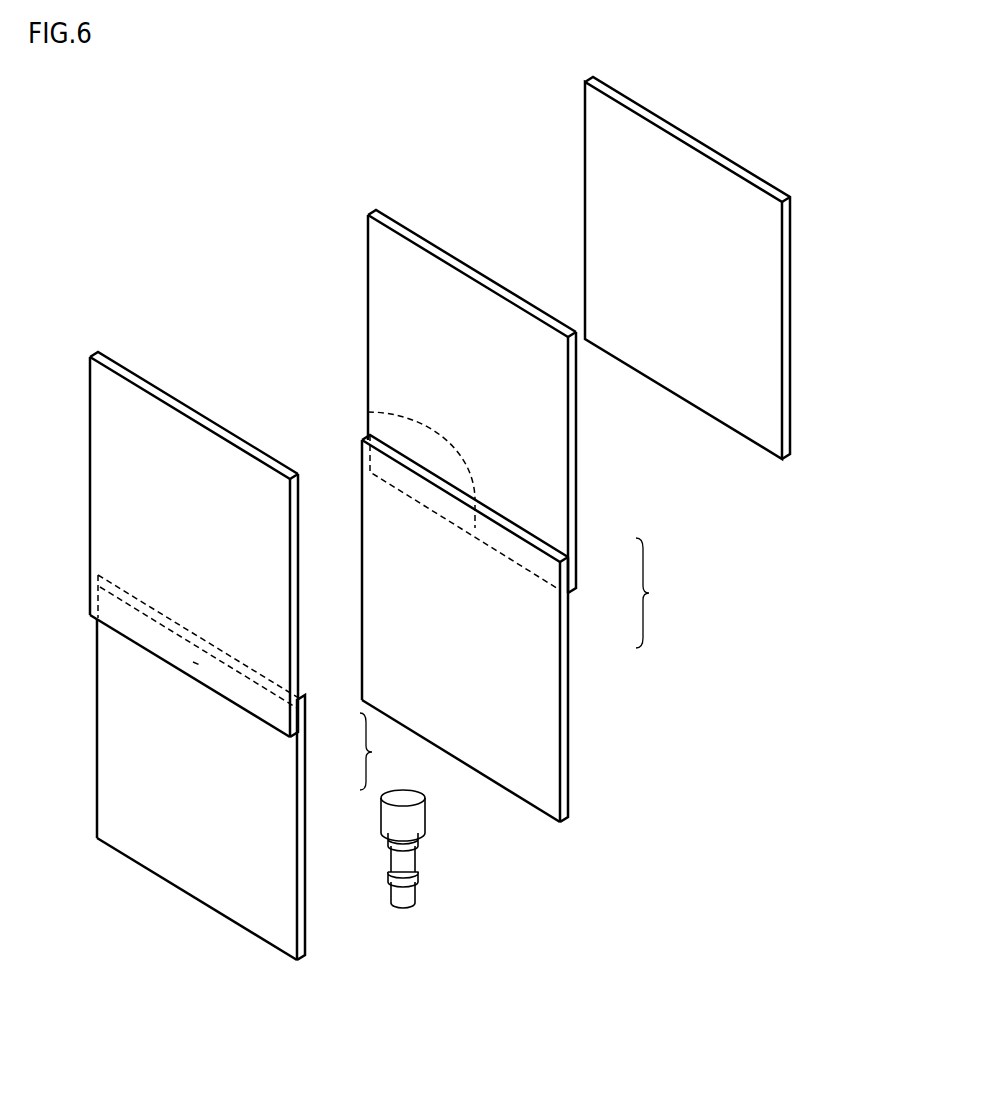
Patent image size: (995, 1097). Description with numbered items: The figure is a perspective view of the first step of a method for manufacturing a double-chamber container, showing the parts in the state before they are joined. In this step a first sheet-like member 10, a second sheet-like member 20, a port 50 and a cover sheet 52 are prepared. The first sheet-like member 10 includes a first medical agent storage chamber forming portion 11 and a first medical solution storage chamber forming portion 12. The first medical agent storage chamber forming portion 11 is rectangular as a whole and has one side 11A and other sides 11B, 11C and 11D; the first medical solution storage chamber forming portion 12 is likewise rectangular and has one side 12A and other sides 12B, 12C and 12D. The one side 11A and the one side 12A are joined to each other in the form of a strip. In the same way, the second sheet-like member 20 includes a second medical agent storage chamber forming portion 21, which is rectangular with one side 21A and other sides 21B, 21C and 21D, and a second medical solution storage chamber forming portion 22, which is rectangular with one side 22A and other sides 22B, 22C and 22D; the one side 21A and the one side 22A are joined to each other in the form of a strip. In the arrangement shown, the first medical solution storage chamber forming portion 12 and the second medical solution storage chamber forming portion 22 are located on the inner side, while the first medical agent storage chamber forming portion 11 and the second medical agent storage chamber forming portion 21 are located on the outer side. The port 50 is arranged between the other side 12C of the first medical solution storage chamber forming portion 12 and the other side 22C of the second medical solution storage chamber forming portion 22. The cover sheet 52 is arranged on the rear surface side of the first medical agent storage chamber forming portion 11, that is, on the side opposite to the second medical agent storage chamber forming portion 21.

The first sheet-like member 10 is at (655, 593).
The first medical agent storage chamber forming portion 11 is at (475, 401).
The one side of first medical agent storage chamber forming portion 11A is at (368, 412).
The other side of first medical agent storage chamber forming portion 11B is at (548, 470).
The other side of first medical agent storage chamber forming portion 11C is at (478, 297).
The other side of first medical agent storage chamber forming portion 11D is at (380, 348).
The first medical solution storage chamber forming portion 12 is at (471, 628).
The one side of first medical solution storage chamber forming portion 12A is at (455, 509).
The other side of first medical solution storage chamber forming portion 12B is at (548, 729).
The other side of first medical solution storage chamber forming portion 12C is at (470, 754).
The other side of first medical solution storage chamber forming portion 12D is at (380, 566).
The second sheet-like member 20 is at (377, 751).
The second medical agent storage chamber forming portion 21 is at (197, 544).
The one side of second medical agent storage chamber forming portion 21A is at (163, 638).
The other side of second medical agent storage chamber forming portion 21B is at (275, 611).
The other side of second medical agent storage chamber forming portion 21C is at (198, 440).
The other side of second medical agent storage chamber forming portion 21D is at (102, 490).
The second medical solution storage chamber forming portion 22 is at (201, 789).
The one side of second medical solution storage chamber forming portion 22A is at (193, 662).
The other side of second medical solution storage chamber forming portion 22B is at (282, 866).
The other side of second medical solution storage chamber forming portion 22C is at (188, 880).
The other side of second medical solution storage chamber forming portion 22D is at (108, 759).
The port 50 is at (405, 864).
The cover sheet 52 is at (677, 157).